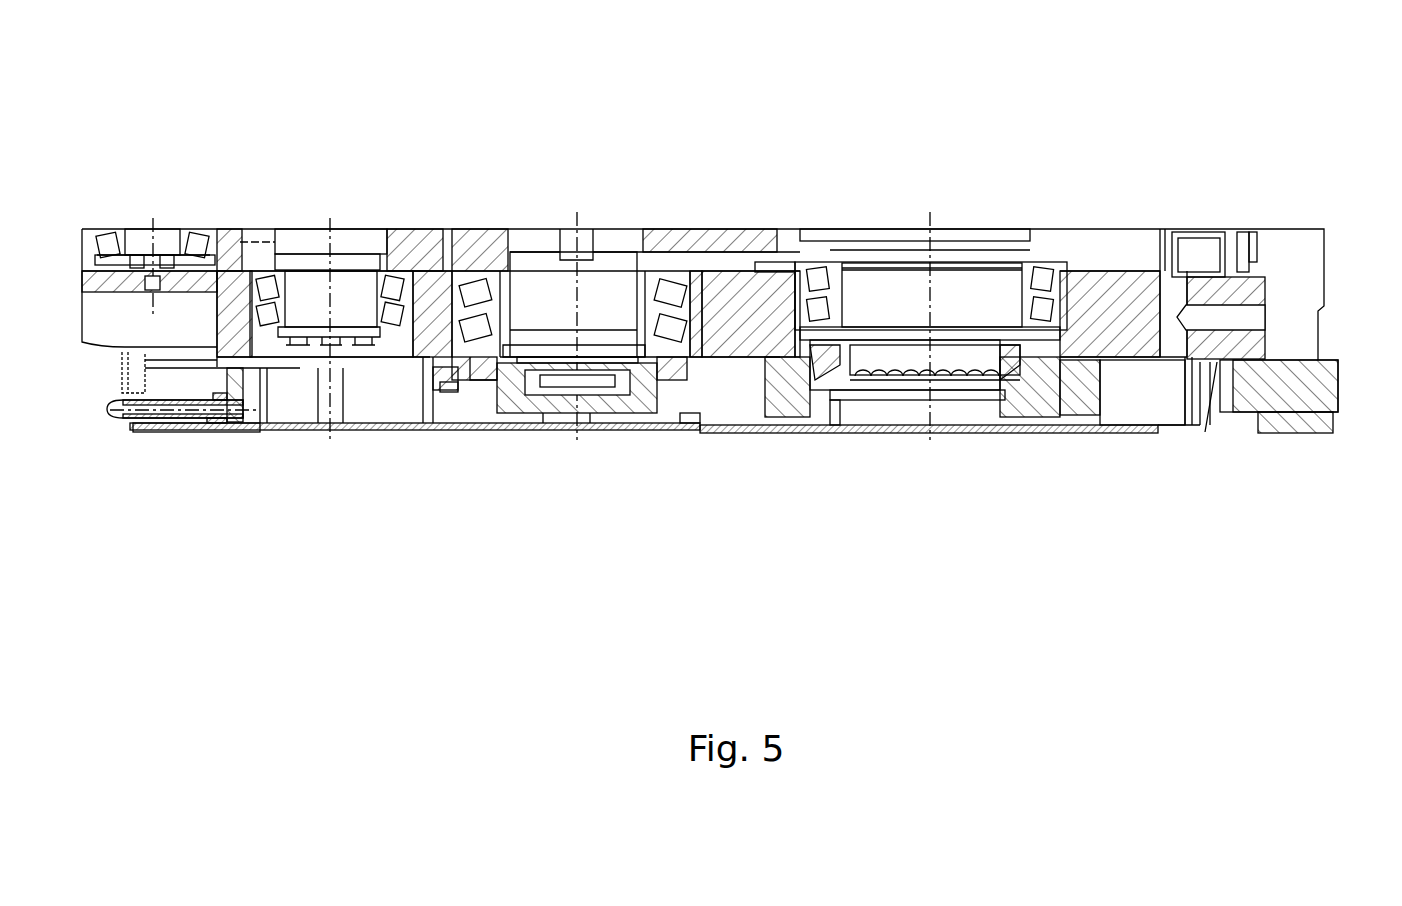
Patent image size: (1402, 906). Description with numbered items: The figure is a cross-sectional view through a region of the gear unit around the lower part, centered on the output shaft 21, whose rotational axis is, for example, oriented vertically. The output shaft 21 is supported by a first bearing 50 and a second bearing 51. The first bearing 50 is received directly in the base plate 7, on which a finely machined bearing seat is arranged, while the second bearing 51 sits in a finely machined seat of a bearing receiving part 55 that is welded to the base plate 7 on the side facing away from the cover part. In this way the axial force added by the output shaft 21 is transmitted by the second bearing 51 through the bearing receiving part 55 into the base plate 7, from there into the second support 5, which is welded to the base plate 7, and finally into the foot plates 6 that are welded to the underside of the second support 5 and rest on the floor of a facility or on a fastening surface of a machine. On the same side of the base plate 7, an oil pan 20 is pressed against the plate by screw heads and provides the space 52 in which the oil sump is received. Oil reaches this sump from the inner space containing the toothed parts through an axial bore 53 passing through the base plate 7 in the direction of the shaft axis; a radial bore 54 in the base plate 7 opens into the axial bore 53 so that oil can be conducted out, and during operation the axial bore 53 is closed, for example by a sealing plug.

The second support 5 is at (1301, 393).
The foot plate 6 is at (1290, 423).
The base plate 7 is at (728, 294).
The oil pan 20 is at (441, 425).
The output shaft 21 is at (833, 292).
The first bearing 50 is at (818, 275).
The second bearing 51 is at (836, 373).
The space for the oil sump 52 is at (1150, 402).
The axial bore 53 is at (1172, 297).
The radial bore 54 is at (1232, 313).
The bearing receiving part 55 is at (1072, 393).